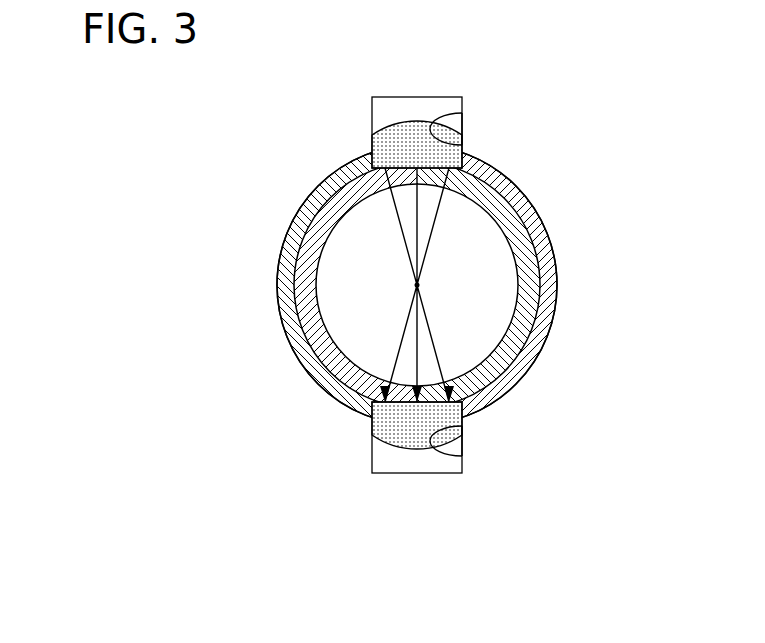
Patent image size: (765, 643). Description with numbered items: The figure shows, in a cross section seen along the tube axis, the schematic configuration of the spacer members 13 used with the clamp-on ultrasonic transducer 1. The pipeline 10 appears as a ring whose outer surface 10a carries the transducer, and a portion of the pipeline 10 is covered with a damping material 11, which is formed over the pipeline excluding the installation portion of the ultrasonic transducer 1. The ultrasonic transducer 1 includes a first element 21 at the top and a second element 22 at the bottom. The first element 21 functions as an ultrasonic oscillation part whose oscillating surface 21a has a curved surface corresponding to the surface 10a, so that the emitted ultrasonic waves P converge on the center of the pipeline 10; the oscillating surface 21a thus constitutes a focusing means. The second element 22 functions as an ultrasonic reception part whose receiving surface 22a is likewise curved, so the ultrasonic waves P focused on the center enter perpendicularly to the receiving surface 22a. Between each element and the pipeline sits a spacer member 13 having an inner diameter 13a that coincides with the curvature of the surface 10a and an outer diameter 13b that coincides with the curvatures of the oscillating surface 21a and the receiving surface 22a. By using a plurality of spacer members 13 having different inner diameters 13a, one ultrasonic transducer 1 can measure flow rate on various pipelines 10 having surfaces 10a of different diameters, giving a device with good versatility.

The ultrasonic transducer 1 is at (474, 107).
The pipeline 10 is at (303, 274).
The surface of the pipeline 10a is at (543, 273).
The damping material 11 is at (538, 212).
The spacer member 13 is at (380, 148).
The inner diameter 13a is at (388, 188).
The outer diameter 13b is at (446, 114).
The first element 21 is at (380, 110).
The oscillating surface 21a is at (450, 148).
The second element 22 is at (382, 460).
The receiving surface 22a is at (442, 431).
The ultrasonic waves P is at (403, 238).